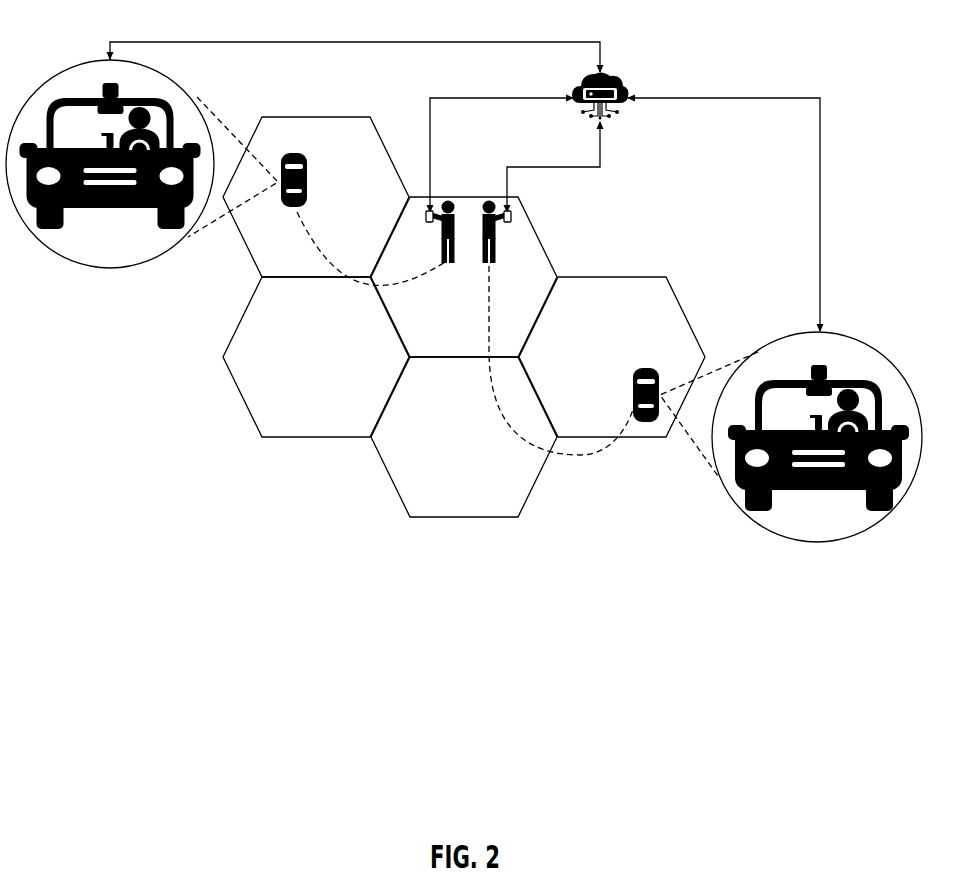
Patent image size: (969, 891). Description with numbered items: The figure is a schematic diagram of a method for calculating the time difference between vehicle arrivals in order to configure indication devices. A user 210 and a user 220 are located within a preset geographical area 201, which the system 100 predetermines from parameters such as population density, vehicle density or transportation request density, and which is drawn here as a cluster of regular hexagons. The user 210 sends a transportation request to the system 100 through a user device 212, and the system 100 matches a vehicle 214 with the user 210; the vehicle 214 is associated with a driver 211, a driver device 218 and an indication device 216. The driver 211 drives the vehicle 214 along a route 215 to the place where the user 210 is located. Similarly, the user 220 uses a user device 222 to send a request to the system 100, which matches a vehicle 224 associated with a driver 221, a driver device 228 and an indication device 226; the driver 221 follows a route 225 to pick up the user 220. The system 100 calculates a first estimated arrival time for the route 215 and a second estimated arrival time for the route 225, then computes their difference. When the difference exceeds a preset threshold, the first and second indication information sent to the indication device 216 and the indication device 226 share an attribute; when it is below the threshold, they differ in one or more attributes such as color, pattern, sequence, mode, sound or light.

The system 100 is at (613, 80).
The preset geographical area 201 is at (541, 310).
The user 210 is at (497, 253).
The driver 211 is at (855, 392).
The user device 212 is at (512, 220).
The vehicle 214 is at (632, 391).
The route 215 is at (494, 405).
The indication device 216 is at (811, 370).
The driver device 218 is at (814, 420).
The user 220 is at (443, 243).
The driver 221 is at (151, 111).
The user device 222 is at (428, 217).
The vehicle 224 is at (307, 183).
The route 225 is at (358, 297).
The indication device 226 is at (104, 88).
The driver device 228 is at (106, 141).